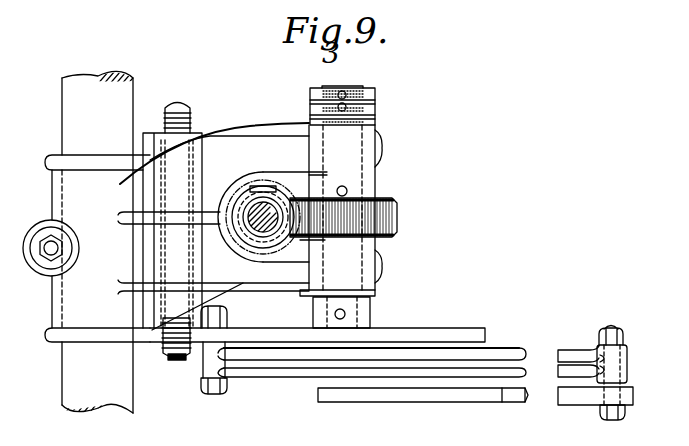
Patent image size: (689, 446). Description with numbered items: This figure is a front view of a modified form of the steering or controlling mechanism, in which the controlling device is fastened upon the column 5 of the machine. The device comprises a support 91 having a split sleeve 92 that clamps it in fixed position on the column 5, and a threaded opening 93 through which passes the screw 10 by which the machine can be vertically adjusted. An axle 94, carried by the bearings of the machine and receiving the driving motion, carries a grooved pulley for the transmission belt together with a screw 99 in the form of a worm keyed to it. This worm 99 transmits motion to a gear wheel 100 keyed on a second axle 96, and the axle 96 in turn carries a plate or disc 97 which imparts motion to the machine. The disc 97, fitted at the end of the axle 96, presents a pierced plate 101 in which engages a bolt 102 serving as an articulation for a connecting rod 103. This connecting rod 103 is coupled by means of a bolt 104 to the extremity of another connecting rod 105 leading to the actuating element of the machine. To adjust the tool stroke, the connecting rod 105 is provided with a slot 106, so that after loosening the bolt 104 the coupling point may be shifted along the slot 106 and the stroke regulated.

The column 5 is at (72, 118).
The split sleeve 92 is at (55, 314).
The threaded opening 93 is at (163, 327).
The screw 10 is at (180, 363).
The support 91 is at (250, 140).
The screw (worm) 99 is at (278, 188).
The axle 94 is at (267, 232).
The gear wheel 100 is at (398, 216).
The axle 96 is at (350, 88).
The plate (disc) 97 is at (407, 331).
The bolt 102 is at (214, 400).
The connecting rod 103 is at (498, 357).
The pierced plate 101 is at (268, 340).
The connecting rod 105 is at (463, 401).
The slot 106 is at (517, 399).
The bolt 104 is at (608, 327).